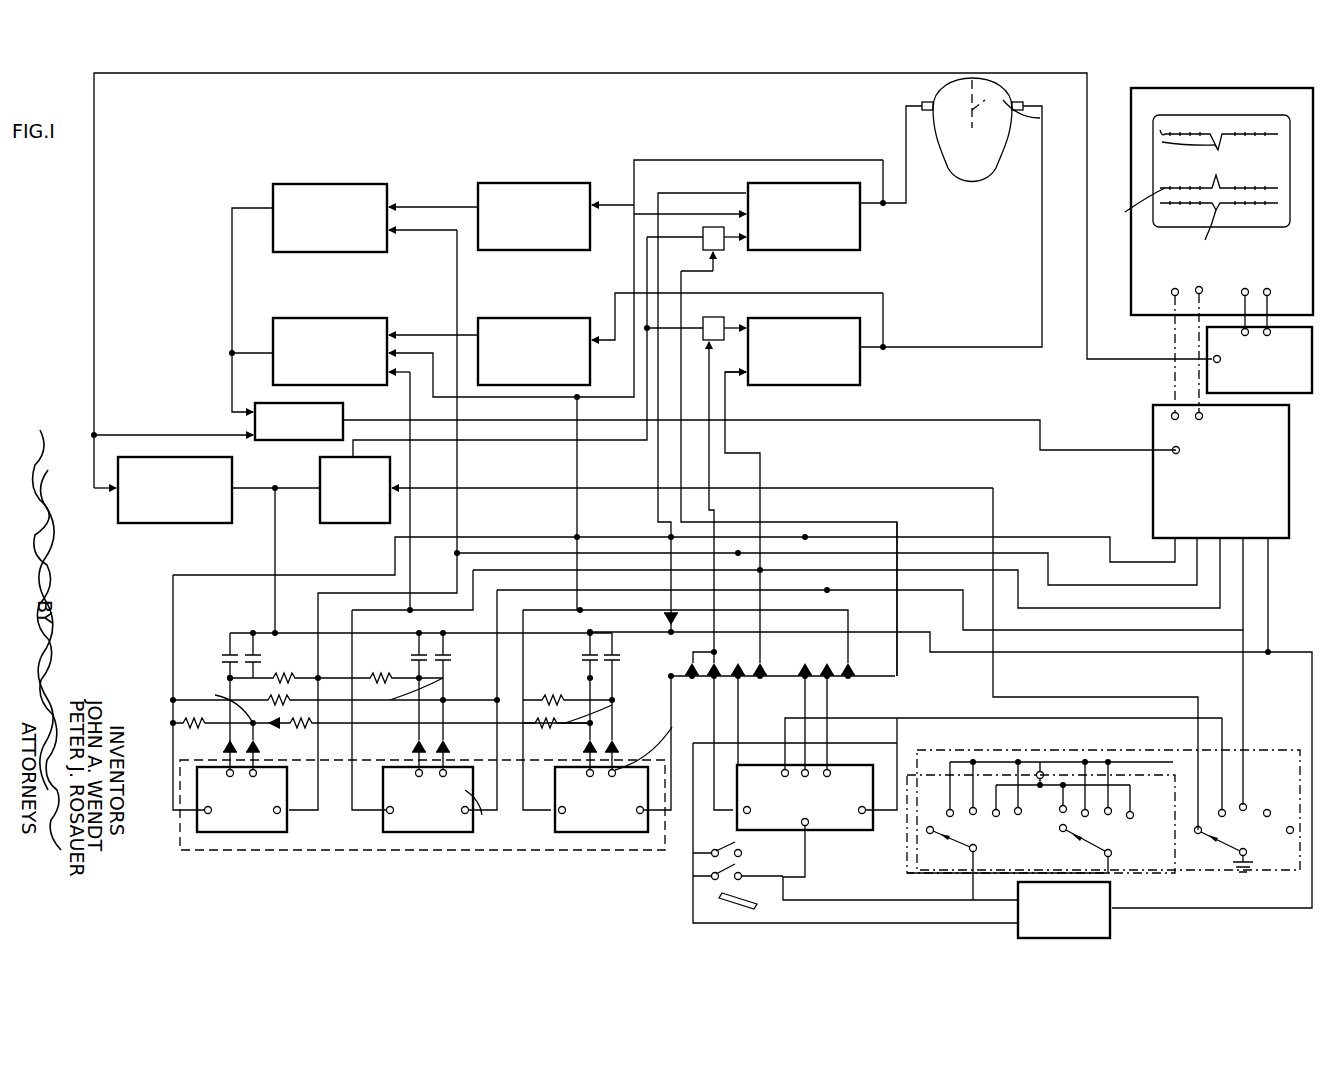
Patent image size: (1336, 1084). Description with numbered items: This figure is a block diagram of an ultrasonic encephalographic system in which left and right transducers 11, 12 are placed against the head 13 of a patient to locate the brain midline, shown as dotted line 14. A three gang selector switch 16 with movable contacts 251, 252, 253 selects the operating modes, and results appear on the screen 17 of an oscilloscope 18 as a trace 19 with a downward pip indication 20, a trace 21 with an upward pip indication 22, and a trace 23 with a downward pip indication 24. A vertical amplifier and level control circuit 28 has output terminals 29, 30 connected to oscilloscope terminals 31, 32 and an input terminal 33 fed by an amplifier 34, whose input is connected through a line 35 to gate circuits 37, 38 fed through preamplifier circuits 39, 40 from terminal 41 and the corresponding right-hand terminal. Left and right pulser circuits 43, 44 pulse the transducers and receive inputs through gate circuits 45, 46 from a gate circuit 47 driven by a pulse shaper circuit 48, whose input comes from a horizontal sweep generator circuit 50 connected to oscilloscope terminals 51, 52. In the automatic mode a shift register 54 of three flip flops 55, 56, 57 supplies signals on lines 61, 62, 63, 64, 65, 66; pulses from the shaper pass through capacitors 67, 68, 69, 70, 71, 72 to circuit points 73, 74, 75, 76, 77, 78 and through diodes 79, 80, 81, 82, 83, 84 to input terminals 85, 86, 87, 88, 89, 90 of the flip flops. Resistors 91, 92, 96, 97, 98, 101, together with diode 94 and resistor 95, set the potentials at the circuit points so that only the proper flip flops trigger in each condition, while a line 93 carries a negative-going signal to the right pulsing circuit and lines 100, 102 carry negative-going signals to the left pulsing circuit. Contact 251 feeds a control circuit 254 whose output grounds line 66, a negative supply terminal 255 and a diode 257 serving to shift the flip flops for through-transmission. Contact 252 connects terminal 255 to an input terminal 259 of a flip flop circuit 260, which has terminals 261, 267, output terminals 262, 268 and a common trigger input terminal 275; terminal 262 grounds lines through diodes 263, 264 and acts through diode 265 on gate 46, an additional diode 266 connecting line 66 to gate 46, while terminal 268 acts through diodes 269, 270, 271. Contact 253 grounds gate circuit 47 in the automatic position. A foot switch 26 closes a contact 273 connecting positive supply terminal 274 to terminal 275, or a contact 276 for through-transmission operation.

The left transducer 11 is at (930, 100).
The right transducer 12 is at (1028, 118).
The head 13 is at (990, 145).
The midline 14 is at (1010, 95).
The three gang selector switch 16 is at (1262, 772).
The screen 17 is at (1160, 168).
The oscilloscope 18 is at (1148, 266).
The trace 19 is at (1165, 205).
The downward pip indication 20 is at (1199, 234).
The trace 21 is at (1128, 205).
The upward pip indication 22 is at (1216, 175).
The trace 23 is at (1160, 130).
The downward pip indication 24 is at (1162, 146).
The foot switch 26 is at (720, 900).
The vertical amplifier and level control circuit 28 is at (1160, 497).
The output terminal 29 is at (1172, 417).
The output terminal 30 is at (1196, 413).
The terminal 31 is at (1172, 292).
The terminal 32 is at (1196, 293).
The input terminal 33 is at (1172, 452).
The amplifier 34 is at (256, 408).
The line 35 is at (230, 335).
The gate circuit 37 is at (350, 184).
The gate circuit 38 is at (337, 318).
The preamplifier circuit 39 is at (540, 183).
The preamplifier circuit 40 is at (535, 318).
The terminal 41 is at (883, 210).
The left pulser circuit 43 is at (780, 183).
The right pulser circuit 44 is at (835, 318).
The gate circuit 45 is at (724, 250).
The gate circuit 46 is at (724, 317).
The gate circuit 47 is at (345, 523).
The pulse shaper circuit 48 is at (168, 523).
The horizontal sweep generator circuit 50 is at (1307, 393).
The terminal 51 is at (1245, 288).
The terminal 52 is at (1268, 288).
The shift register 54 is at (308, 848).
The flip flop 55 is at (240, 832).
The flip flop 56 is at (430, 832).
The flip flop 57 is at (572, 832).
The line 61 is at (492, 521).
The line 62 is at (540, 550).
The line 63 is at (572, 572).
The line 64 is at (635, 592).
The line 65 is at (663, 630).
The line 66 is at (680, 633).
The capacitor 67 is at (226, 640).
The capacitor 68 is at (265, 640).
The capacitor 69 is at (425, 650).
The capacitor 70 is at (448, 665).
The capacitor 71 is at (582, 652).
The capacitor 72 is at (615, 665).
The circuit point 73 is at (222, 678).
The circuit point 74 is at (220, 692).
The circuit point 75 is at (475, 700).
The circuit point 76 is at (399, 699).
The circuit point 77 is at (608, 712).
The circuit point 78 is at (615, 698).
The diode 79 is at (226, 750).
The diode 80 is at (266, 750).
The diode 81 is at (412, 750).
The diode 82 is at (462, 742).
The diode 83 is at (586, 748).
The diode 84 is at (620, 750).
The input terminal 85 is at (205, 773).
The input terminal 86 is at (268, 775).
The input terminal 87 is at (385, 768).
The input terminal 88 is at (484, 813).
The input terminal 89 is at (590, 773).
The input terminal 90 is at (655, 746).
The resistor 91 is at (305, 665).
The resistor 92 is at (385, 668).
The line 93 is at (760, 500).
The diode 94 is at (290, 700).
The resistor 95 is at (305, 723).
The resistor 96 is at (173, 722).
The resistor 97 is at (300, 675).
The resistor 98 is at (560, 690).
The line 100 is at (632, 266).
The resistor 101 is at (555, 710).
The line 102 is at (656, 508).
The movable contact 251 is at (960, 838).
The movable contact 252 is at (1090, 845).
The movable contact 253 is at (1225, 850).
The control circuit 254 is at (1110, 890).
The terminal 255 is at (1040, 770).
The diode 257 is at (668, 612).
The input terminal 259 is at (790, 878).
The flip flop circuit 260 is at (828, 830).
The terminal 261 is at (783, 760).
The output terminal 262 is at (747, 808).
The diode 263 is at (745, 675).
The diode 264 is at (770, 648).
The diode 265 is at (720, 670).
The diode 266 is at (688, 683).
The terminal 267 is at (828, 768).
The terminal 268 is at (858, 838).
The diode 269 is at (812, 680).
The diode 270 is at (821, 716).
The diode 271 is at (850, 680).
The contact 273 is at (690, 845).
The positive supply terminal 274 is at (900, 863).
The terminal 275 is at (805, 768).
The contact 276 is at (685, 880).